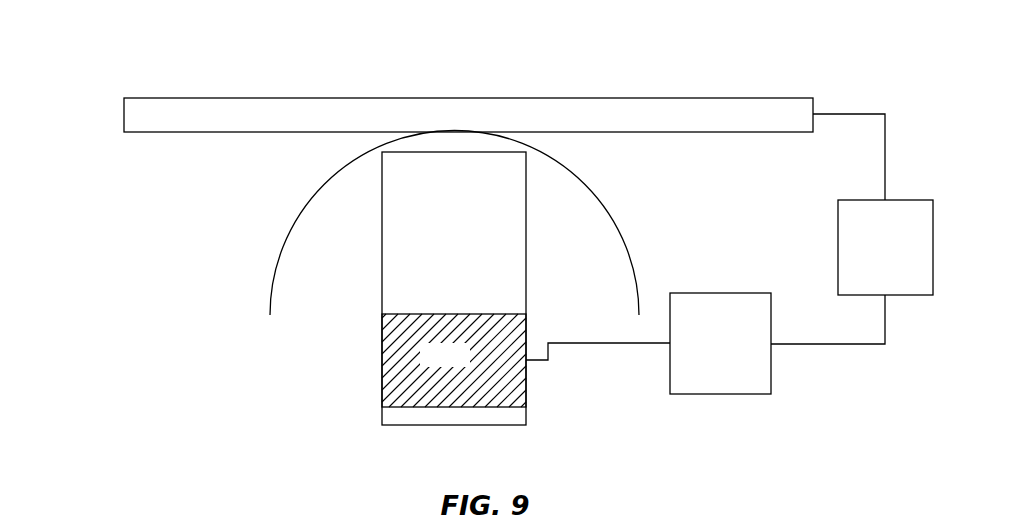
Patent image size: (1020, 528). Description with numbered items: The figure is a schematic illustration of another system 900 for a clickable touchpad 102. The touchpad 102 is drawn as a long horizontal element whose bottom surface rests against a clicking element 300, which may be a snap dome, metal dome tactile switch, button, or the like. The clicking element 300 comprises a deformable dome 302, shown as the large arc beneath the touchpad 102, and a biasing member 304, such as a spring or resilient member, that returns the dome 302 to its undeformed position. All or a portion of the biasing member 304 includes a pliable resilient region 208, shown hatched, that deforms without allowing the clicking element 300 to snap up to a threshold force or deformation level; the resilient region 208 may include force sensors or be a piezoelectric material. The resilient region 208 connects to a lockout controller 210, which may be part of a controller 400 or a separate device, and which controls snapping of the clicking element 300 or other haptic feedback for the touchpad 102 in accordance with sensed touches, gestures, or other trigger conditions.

The system 900 is at (129, 38).
The touchpad 102 is at (468, 115).
The clicking element 300 is at (640, 194).
The deformable dome 302 is at (563, 163).
The biasing member 304 is at (454, 288).
The resilient region 208 is at (526, 360).
The lockout controller 210 is at (777, 343).
The controller 400 is at (873, 204).